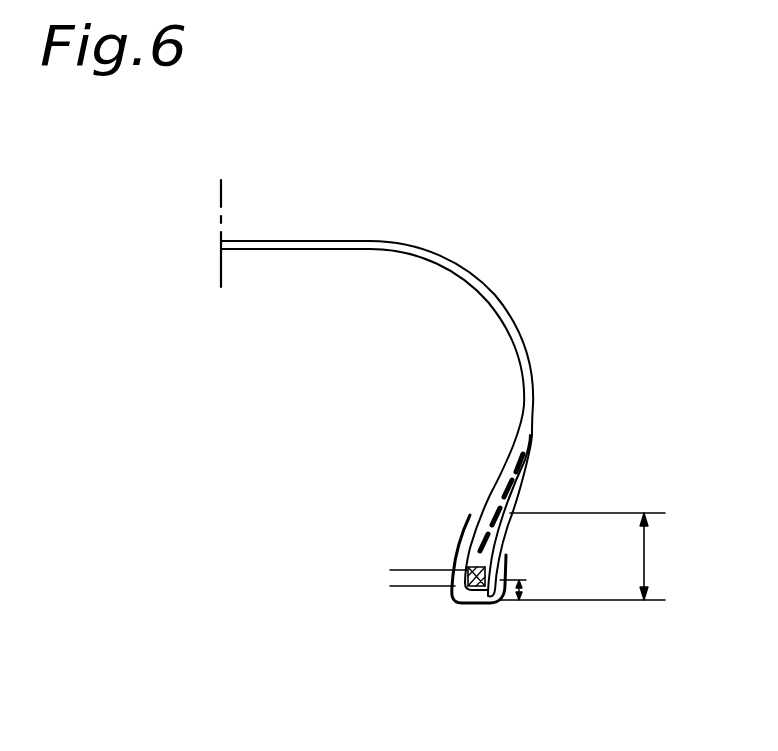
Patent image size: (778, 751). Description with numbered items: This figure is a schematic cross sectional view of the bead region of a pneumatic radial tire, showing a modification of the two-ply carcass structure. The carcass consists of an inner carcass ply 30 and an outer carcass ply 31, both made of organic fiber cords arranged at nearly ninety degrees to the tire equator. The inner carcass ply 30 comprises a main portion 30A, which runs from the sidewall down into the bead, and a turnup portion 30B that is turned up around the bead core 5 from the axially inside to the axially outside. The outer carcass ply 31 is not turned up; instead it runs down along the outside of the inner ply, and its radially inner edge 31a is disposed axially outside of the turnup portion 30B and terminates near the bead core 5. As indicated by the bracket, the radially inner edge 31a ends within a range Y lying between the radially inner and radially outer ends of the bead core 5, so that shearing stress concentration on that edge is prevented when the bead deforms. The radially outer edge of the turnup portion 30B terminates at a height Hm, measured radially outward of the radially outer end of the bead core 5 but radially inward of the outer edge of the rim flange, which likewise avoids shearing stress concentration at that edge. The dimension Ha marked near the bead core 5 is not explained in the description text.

The inner carcass ply 30 is at (444, 388).
The main portion 30A is at (517, 365).
The turnup portion 30B is at (502, 537).
The outer carcass ply 31 is at (463, 265).
The radially inner edge 31a is at (504, 569).
The bead core 5 is at (492, 603).
The range Y is at (388, 565).
The height Hm is at (593, 556).
The height Ha is at (523, 588).